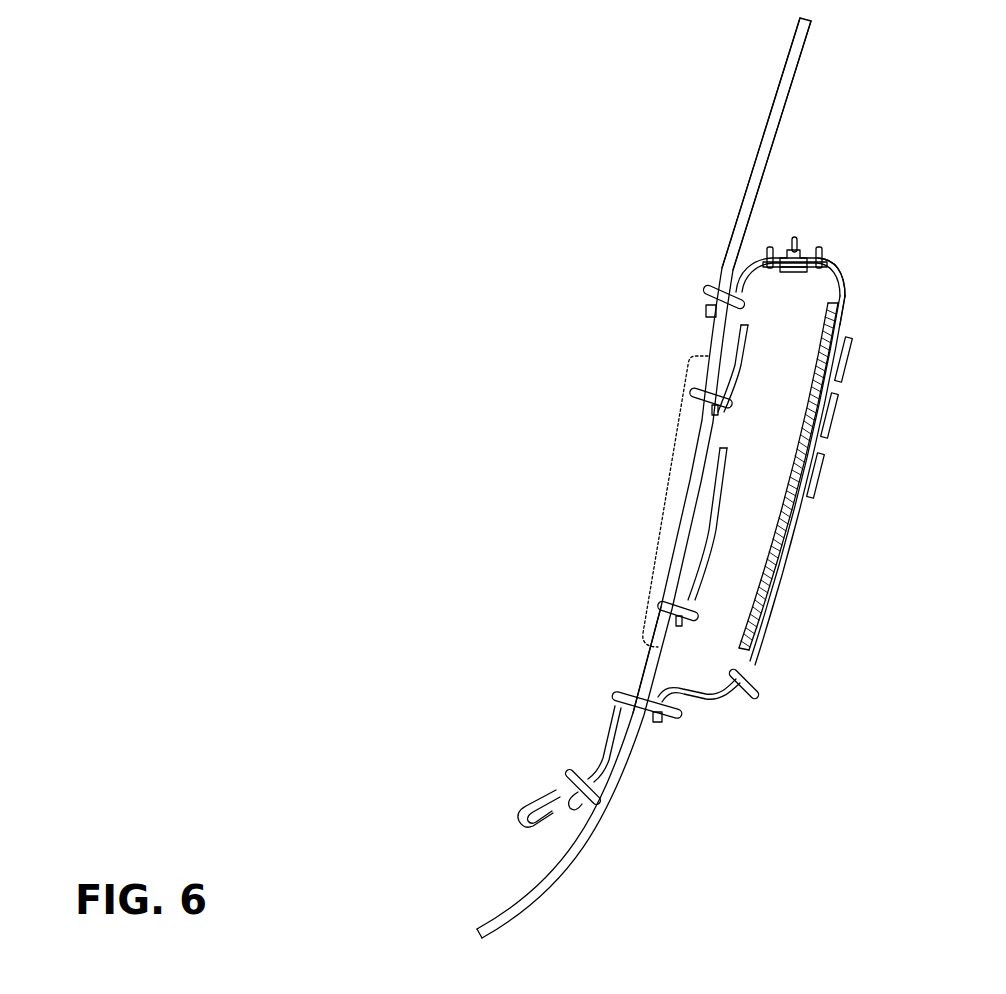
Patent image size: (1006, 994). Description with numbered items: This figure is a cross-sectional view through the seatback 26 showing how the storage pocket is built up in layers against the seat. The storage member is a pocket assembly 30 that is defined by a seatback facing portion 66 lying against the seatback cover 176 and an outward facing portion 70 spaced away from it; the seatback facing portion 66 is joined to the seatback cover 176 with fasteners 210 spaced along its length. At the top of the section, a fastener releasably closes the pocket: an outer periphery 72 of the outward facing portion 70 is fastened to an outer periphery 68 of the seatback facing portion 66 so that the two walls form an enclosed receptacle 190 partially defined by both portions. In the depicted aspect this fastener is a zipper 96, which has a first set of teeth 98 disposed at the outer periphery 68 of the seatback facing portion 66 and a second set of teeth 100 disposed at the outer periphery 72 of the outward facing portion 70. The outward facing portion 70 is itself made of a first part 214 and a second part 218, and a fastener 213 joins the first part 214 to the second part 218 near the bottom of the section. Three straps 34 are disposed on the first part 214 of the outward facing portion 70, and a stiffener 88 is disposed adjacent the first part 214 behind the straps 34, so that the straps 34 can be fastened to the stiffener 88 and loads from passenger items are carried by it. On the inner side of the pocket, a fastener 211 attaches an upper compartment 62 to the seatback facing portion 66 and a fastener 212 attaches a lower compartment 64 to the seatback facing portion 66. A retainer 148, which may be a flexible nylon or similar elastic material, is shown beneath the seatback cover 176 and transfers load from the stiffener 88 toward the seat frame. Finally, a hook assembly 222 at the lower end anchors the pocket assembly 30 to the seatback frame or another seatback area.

The seatback 26 is at (747, 184).
The seatback cover 176 is at (780, 116).
The outer periphery of the seatback facing portion 68 is at (750, 260).
The outward facing portion 70 is at (793, 543).
The outer periphery of the outward facing portion 72 is at (842, 267).
The stiffener 88 is at (840, 322).
The enclosed receptacle 190 is at (796, 311).
The pocket assembly 30 is at (840, 258).
The first part 214 is at (780, 600).
The straps 34 is at (820, 473).
The zipper 96 is at (808, 245).
The first set of teeth 98 is at (768, 248).
The second set of teeth 100 is at (825, 250).
The fasteners 210 is at (707, 290).
The fastener 211 is at (690, 398).
The fastener 212 is at (660, 610).
The fastener 213 is at (758, 683).
The second part 218 is at (717, 695).
The hook assembly 222 is at (590, 747).
The upper compartment 62 is at (733, 347).
The lower compartment 64 is at (710, 520).
The seatback facing portion 66 is at (653, 670).
The retainer 148 is at (683, 452).